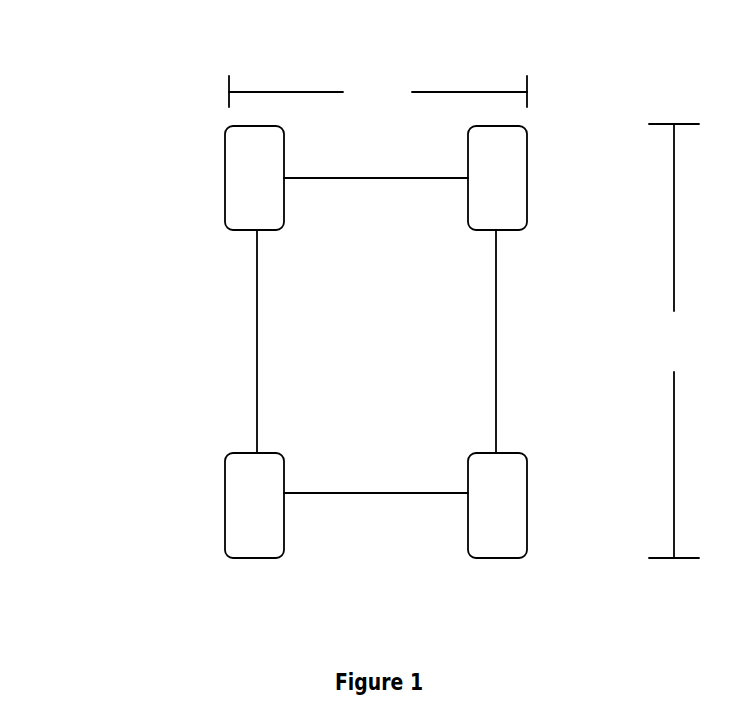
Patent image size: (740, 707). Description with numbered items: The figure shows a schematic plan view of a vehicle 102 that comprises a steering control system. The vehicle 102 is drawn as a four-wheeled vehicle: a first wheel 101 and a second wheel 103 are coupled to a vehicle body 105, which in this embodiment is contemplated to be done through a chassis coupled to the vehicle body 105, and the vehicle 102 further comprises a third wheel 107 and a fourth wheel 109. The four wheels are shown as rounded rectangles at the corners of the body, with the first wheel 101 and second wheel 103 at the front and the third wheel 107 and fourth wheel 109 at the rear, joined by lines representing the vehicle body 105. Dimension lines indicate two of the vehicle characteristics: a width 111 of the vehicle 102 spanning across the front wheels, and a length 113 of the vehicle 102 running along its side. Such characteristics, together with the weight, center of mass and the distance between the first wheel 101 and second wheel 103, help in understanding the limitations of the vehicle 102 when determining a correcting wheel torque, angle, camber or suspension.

The vehicle 102 is at (96, 62).
The first wheel 101 is at (225, 175).
The second wheel 103 is at (527, 174).
The vehicle body 105 is at (257, 345).
The third wheel 107 is at (225, 510).
The fourth wheel 109 is at (527, 502).
The width 111 is at (378, 91).
The length 113 is at (674, 341).